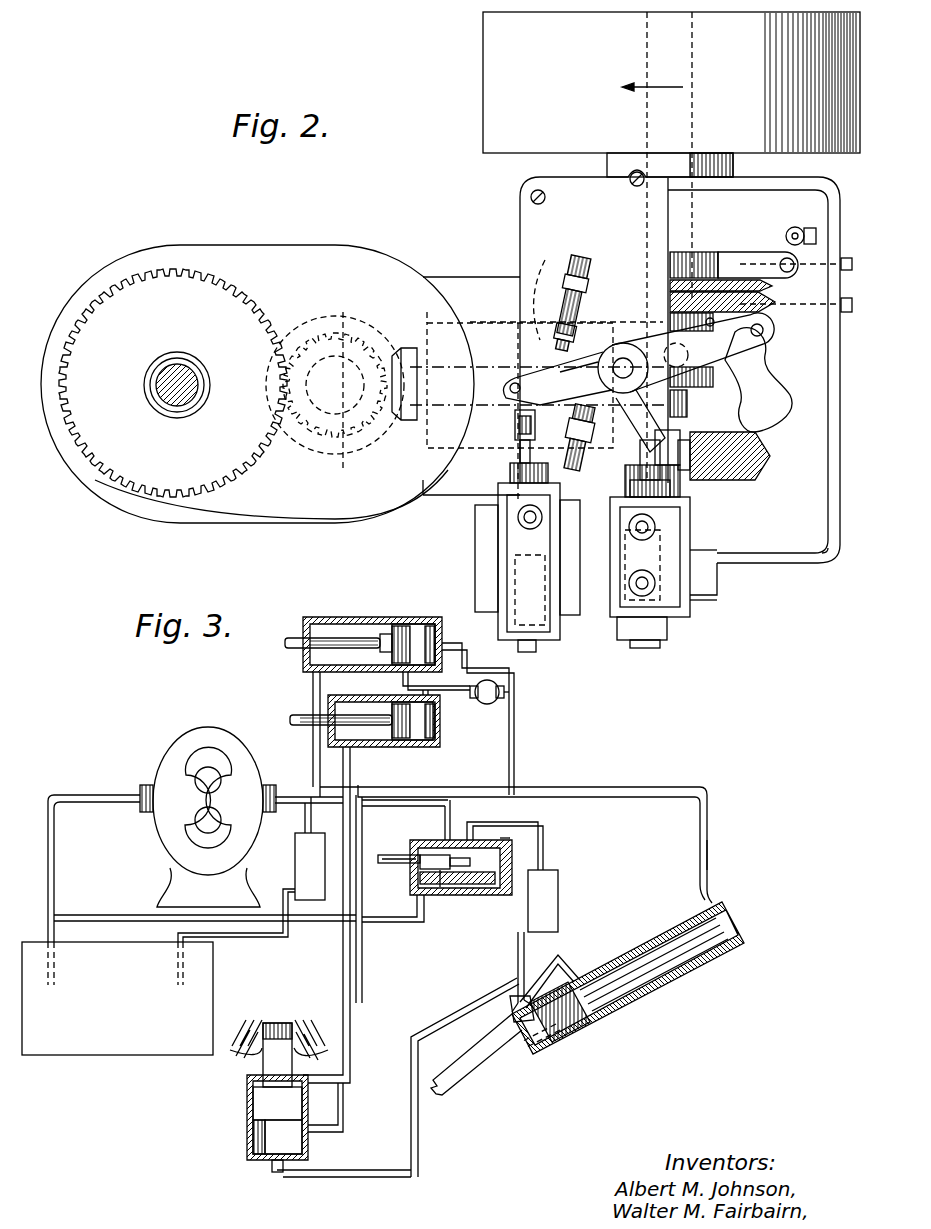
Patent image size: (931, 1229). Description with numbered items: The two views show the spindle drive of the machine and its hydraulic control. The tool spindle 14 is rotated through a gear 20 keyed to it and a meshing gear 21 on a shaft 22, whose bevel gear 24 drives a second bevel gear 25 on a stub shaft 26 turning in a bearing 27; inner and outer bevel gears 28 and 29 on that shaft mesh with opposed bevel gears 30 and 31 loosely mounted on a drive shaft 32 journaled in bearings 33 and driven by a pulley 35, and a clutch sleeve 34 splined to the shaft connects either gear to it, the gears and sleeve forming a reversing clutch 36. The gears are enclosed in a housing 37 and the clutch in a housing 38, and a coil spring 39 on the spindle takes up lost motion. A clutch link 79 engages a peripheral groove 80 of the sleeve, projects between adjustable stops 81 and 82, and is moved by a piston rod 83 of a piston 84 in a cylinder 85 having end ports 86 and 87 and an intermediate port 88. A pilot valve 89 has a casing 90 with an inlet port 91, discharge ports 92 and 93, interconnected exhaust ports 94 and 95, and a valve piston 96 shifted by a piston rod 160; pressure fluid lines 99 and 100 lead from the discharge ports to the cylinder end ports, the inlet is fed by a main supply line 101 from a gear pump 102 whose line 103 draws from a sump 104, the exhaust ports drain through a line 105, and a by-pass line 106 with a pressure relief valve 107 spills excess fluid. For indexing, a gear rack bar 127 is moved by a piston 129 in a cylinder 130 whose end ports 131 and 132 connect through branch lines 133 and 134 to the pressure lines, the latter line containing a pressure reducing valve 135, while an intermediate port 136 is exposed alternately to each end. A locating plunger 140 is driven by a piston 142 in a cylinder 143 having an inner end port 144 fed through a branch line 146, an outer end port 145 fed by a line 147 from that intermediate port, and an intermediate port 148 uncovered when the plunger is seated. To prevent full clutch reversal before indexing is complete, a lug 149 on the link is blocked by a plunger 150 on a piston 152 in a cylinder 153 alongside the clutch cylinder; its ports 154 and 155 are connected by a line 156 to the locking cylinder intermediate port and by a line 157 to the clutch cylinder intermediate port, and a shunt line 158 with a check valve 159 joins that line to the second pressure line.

In FIG. 2, the tool spindle 14 is at (200, 375).
In FIG. 2, the gear 20 is at (268, 462).
In FIG. 2, the gear 21 is at (343, 460).
In FIG. 2, the shaft 22 is at (351, 340).
In FIG. 2, the bevel gear 24 is at (378, 440).
In FIG. 2, the second bevel gear 25 is at (440, 292).
In FIG. 2, the stub shaft 26 is at (480, 322).
In FIG. 2, the bearing 27 is at (404, 500).
In FIG. 2, the inner bevel gear 28 is at (558, 318).
In FIG. 2, the outer bevel gear 29 is at (548, 300).
In FIG. 2, the bevel gear 30 is at (752, 485).
In FIG. 2, the bevel gear 31 is at (742, 276).
In FIG. 2, the drive shaft 32 is at (688, 210).
In FIG. 2, the bearings 33 is at (735, 170).
In FIG. 2, the clutch sleeve 34 is at (735, 442).
In FIG. 2, the pulley 35 is at (838, 128).
In FIG. 2, the reversing clutch 36 is at (766, 380).
In FIG. 2, the housing 37 is at (284, 258).
In FIG. 2, the housing 38 is at (826, 560).
In FIG. 2, the coil spring 39 is at (178, 352).
In FIG. 2, the clutch link 79 is at (718, 360).
In FIG. 2, the peripheral groove 80 is at (822, 300).
In FIG. 2, the adjustable stop 81 is at (586, 262).
In FIG. 2, the adjustable stop 82 is at (576, 472).
In FIG. 2, the piston rod 83 is at (518, 432).
In FIG. 3, the piston rod 83 is at (296, 636).
In FIG. 2, the piston 84 is at (502, 592).
In FIG. 3, the piston 84 is at (421, 625).
In FIG. 2, the cylinder 85 is at (562, 634).
In FIG. 3, the cylinder 85 is at (376, 618).
In FIG. 3, the end port 86 is at (313, 673).
In FIG. 3, the end port 87 is at (455, 655).
In FIG. 3, the intermediate port 88 is at (404, 676).
In FIG. 3, the pilot valve 89 is at (455, 900).
In FIG. 3, the valve casing 90 is at (480, 893).
In FIG. 3, the inlet port 91 is at (472, 826).
In FIG. 3, the discharge port 92 is at (436, 842).
In FIG. 3, the discharge port 93 is at (512, 826).
In FIG. 3, the exhaust port 94 is at (417, 866).
In FIG. 3, the exhaust port 95 is at (516, 953).
In FIG. 3, the valve piston 96 is at (442, 896).
In FIG. 2, the pressure fluid line 99 is at (498, 525).
In FIG. 3, the pressure fluid line 99 is at (402, 786).
In FIG. 2, the pressure fluid line 100 is at (540, 656).
In FIG. 3, the pressure fluid line 100 is at (516, 730).
In FIG. 3, the main supply line 101 is at (402, 899).
In FIG. 3, the gear pump 102 is at (210, 728).
In FIG. 3, the line 103 is at (92, 797).
In FIG. 3, the sump 104 is at (104, 960).
In FIG. 3, the line 105 is at (374, 924).
In FIG. 3, the by-pass line 106 is at (240, 922).
In FIG. 3, the pressure relief valve 107 is at (305, 900).
In FIG. 3, the gear rack bar 127 is at (481, 1072).
In FIG. 3, the piston 129 is at (572, 1040).
In FIG. 3, the cylinder 130 is at (636, 1000).
In FIG. 3, the end port 131 is at (714, 906).
In FIG. 3, the end port 132 is at (510, 1010).
In FIG. 3, the branch line 133 is at (708, 855).
In FIG. 3, the branch line 134 is at (527, 950).
In FIG. 3, the pressure reducing valve 135 is at (558, 896).
In FIG. 3, the intermediate port 136 is at (570, 972).
In FIG. 3, the plunger 140 is at (265, 1056).
In FIG. 3, the piston 142 is at (260, 1098).
In FIG. 3, the cylinder 143 is at (252, 1140).
In FIG. 3, the inner end port 144 is at (346, 1076).
In FIG. 3, the outer end port 145 is at (276, 1172).
In FIG. 3, the branch line 146 is at (356, 1020).
In FIG. 3, the line 147 is at (419, 1151).
In FIG. 3, the intermediate port 148 is at (312, 1138).
In FIG. 2, the lateral arm or lug 149 is at (560, 376).
In FIG. 3, the plunger 150 is at (304, 727).
In FIG. 2, the piston 152 is at (716, 602).
In FIG. 3, the piston 152 is at (441, 728).
In FIG. 2, the cylinder 153 is at (640, 645).
In FIG. 3, the cylinder 153 is at (364, 699).
In FIG. 3, the port 154 is at (351, 751).
In FIG. 3, the port 155 is at (440, 720).
In FIG. 2, the line 156 is at (652, 526).
In FIG. 3, the line 156 is at (343, 985).
In FIG. 2, the line 157 is at (668, 470).
In FIG. 3, the line 157 is at (444, 700).
In FIG. 3, the shunt line 158 is at (472, 685).
In FIG. 3, the check valve 159 is at (506, 693).
In FIG. 3, the piston rod 160 is at (398, 850).